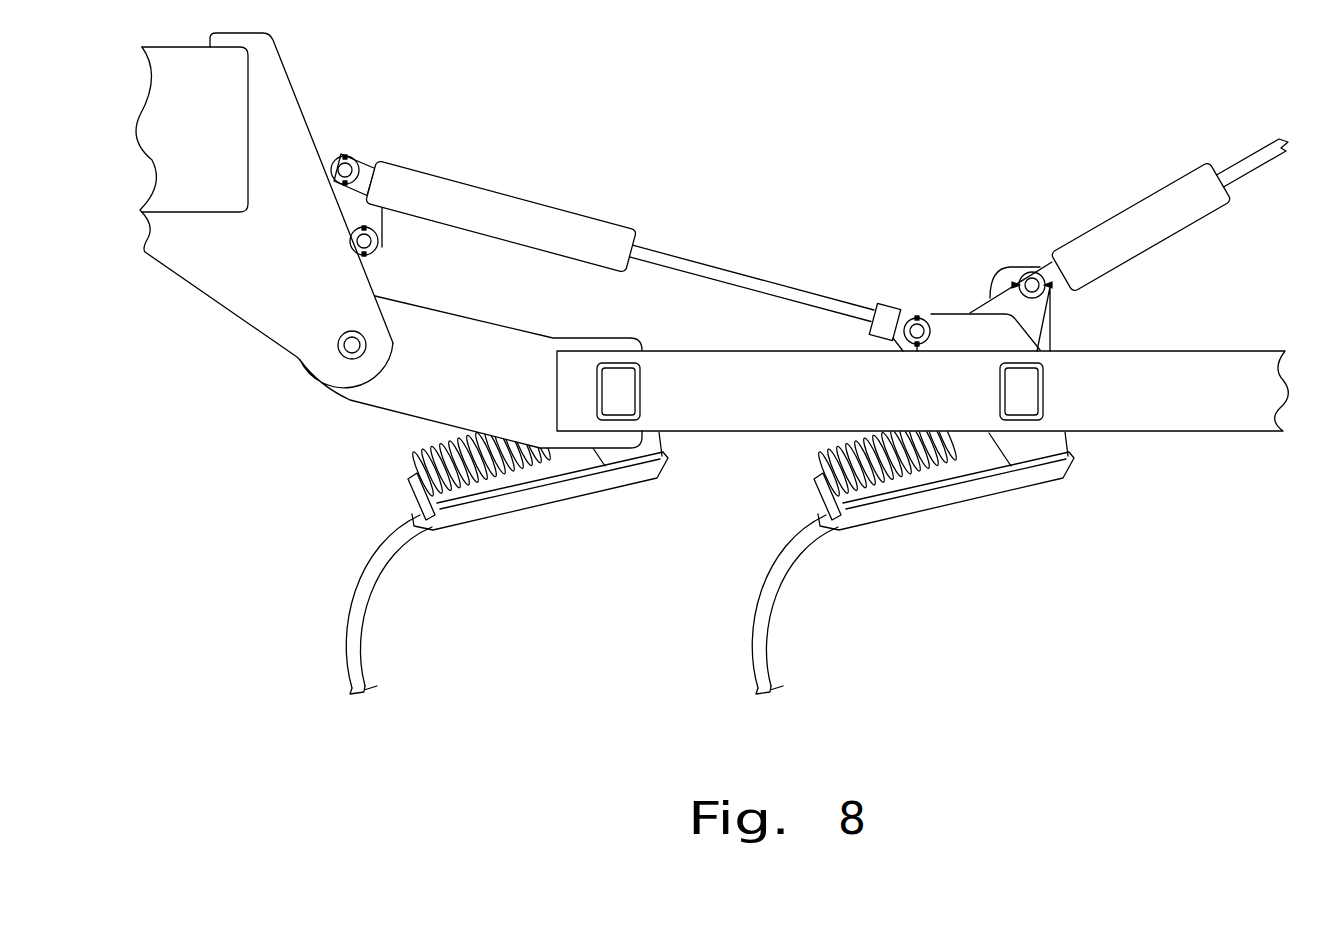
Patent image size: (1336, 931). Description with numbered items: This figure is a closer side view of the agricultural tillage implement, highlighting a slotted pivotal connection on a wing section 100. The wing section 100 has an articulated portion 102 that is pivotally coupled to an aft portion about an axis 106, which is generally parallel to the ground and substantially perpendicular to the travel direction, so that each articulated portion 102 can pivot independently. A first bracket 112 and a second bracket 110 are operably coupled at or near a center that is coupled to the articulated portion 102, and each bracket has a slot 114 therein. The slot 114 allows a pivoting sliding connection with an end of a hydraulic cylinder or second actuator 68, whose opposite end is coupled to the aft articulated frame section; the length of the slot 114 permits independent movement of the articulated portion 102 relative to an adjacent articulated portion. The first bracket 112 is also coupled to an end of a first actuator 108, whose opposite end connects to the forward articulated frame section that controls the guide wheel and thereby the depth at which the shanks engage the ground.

The wing section 100 is at (800, 140).
The second actuator 68 is at (497, 200).
The articulated portion 102 is at (750, 351).
The axis 106 is at (389, 322).
The first actuator 108 is at (1160, 192).
The second bracket 110 is at (947, 313).
The first bracket 112 is at (983, 296).
The slot 114 is at (935, 318).